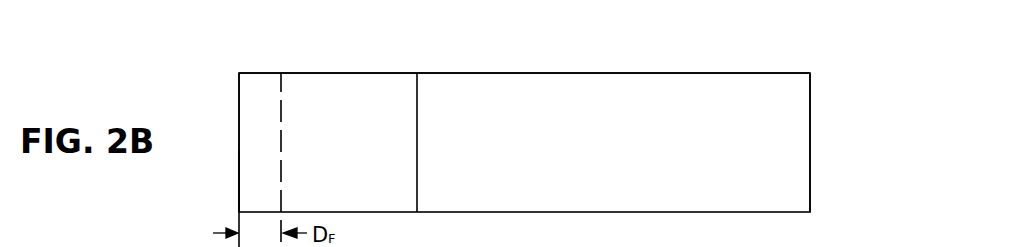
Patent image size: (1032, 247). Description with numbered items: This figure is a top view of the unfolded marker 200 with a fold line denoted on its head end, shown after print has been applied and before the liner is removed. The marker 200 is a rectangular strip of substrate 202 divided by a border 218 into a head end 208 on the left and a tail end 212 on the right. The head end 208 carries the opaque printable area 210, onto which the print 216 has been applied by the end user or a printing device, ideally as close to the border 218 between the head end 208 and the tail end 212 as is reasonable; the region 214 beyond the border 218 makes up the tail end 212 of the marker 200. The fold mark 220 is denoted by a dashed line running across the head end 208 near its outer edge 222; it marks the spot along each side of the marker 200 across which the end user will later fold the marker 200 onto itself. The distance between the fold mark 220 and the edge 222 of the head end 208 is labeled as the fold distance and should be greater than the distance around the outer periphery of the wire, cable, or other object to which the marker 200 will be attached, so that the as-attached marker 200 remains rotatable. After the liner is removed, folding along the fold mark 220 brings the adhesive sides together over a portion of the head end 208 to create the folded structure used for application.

The marker 200 is at (891, 96).
The substrate 202 is at (503, 93).
The head end 208 is at (215, 124).
The opaque printable area 210 is at (349, 142).
The tail end 212 is at (825, 169).
The printable area 214 is at (613, 142).
The print 216 is at (387, 122).
The border 218 is at (417, 122).
The fold mark 220 is at (280, 105).
The edge 222 is at (239, 170).